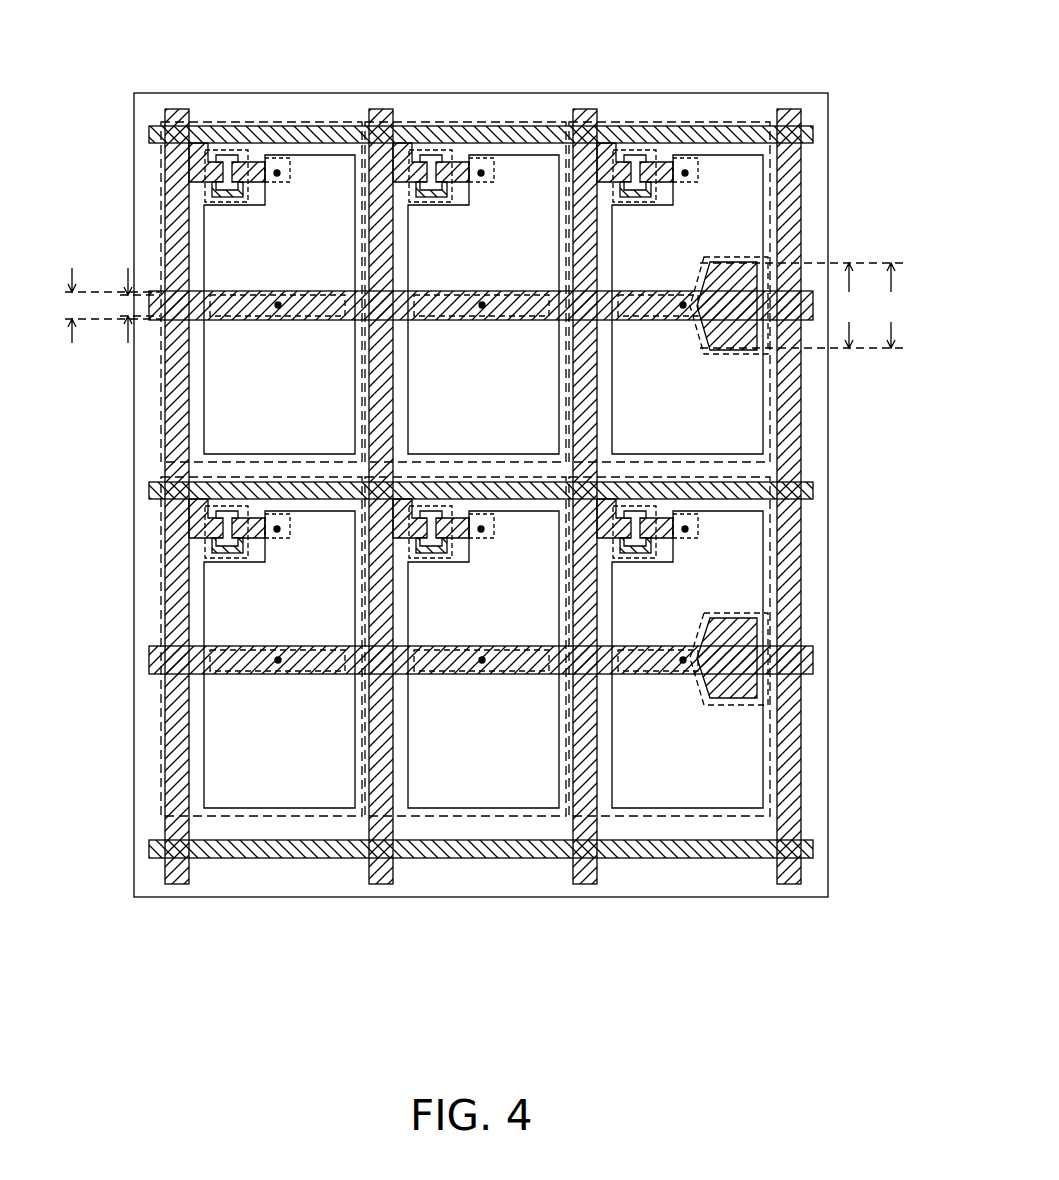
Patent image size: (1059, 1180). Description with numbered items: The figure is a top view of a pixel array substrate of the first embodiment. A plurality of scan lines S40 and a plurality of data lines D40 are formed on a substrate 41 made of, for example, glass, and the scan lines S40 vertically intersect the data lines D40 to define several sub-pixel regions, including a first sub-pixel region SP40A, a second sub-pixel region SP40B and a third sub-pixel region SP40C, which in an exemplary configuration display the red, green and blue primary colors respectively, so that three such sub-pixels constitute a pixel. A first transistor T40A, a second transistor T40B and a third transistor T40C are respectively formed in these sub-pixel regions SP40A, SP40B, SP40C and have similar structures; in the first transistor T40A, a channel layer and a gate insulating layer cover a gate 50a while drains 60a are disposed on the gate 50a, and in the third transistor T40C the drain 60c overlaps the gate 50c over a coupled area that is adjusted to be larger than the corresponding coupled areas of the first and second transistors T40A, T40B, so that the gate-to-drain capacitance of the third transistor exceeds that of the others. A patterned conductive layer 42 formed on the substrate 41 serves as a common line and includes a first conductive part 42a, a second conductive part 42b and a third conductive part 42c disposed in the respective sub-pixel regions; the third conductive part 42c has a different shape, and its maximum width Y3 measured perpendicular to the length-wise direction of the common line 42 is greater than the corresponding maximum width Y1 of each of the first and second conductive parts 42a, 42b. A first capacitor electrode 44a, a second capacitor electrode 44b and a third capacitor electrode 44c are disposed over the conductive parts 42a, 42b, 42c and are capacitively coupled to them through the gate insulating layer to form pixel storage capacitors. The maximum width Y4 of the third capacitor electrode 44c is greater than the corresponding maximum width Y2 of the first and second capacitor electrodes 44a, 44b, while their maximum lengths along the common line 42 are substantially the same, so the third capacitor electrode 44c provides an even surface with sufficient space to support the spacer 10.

The substrate 41 is at (134, 103).
The patterned conductive layer 42 is at (155, 320).
The first conductive part 42a is at (278, 290).
The second conductive part 42b is at (483, 290).
The third conductive part 42c is at (641, 290).
The first capacitor electrode 44a is at (280, 320).
The second capacitor electrode 44b is at (484, 320).
The third capacitor electrode 44c is at (716, 350).
The spacer 10 is at (700, 290).
The gate 50a is at (218, 190).
The gate 50c is at (660, 190).
The drain 60a is at (232, 172).
The drain 60c is at (690, 180).
The data line D40 is at (172, 920).
The scan line S40 is at (813, 134).
The first transistor T40A is at (174, 298).
The second transistor T40B is at (436, 125).
The third transistor T40C is at (744, 298).
The first sub-pixel region SP40A is at (318, 125).
The second sub-pixel region SP40B is at (522, 125).
The third sub-pixel region SP40C is at (723, 125).
The maximum width of first and second conductive parts Y1 is at (106, 305).
The maximum width of first and second capacitor electrodes Y2 is at (125, 305).
The maximum width of third conductive part Y3 is at (892, 305).
The maximum width of third capacitor electrode Y4 is at (802, 305).